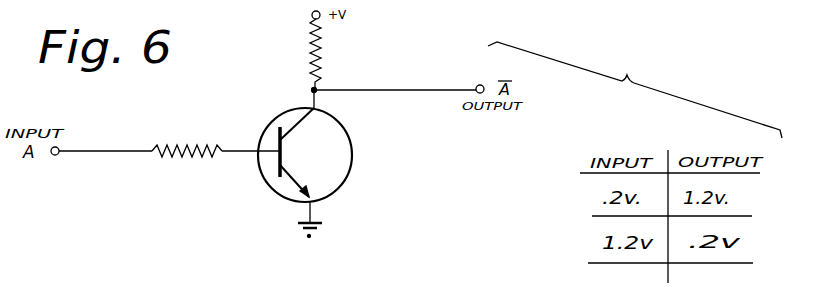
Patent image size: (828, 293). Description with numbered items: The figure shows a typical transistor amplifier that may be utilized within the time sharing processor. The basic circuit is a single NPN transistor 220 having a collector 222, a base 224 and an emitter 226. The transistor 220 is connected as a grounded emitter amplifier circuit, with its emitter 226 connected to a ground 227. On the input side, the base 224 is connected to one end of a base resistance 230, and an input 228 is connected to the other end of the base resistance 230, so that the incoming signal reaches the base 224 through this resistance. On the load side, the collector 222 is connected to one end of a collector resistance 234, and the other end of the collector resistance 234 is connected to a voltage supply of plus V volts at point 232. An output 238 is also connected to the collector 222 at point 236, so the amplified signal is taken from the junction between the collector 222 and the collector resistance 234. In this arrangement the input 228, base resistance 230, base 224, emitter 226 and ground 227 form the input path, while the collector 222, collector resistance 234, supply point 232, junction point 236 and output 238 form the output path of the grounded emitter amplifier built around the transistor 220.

The NPN transistor 220 is at (355, 155).
The collector 222 is at (307, 122).
The base 224 is at (236, 152).
The emitter 226 is at (305, 183).
The ground 227 is at (315, 233).
The input 228 is at (58, 156).
The base resistance 230 is at (200, 130).
The point (voltage supply of +V volts) 232 is at (320, 18).
The collector resistance 234 is at (322, 55).
The point (collector output junction) 236 is at (317, 88).
The output 238 is at (483, 79).